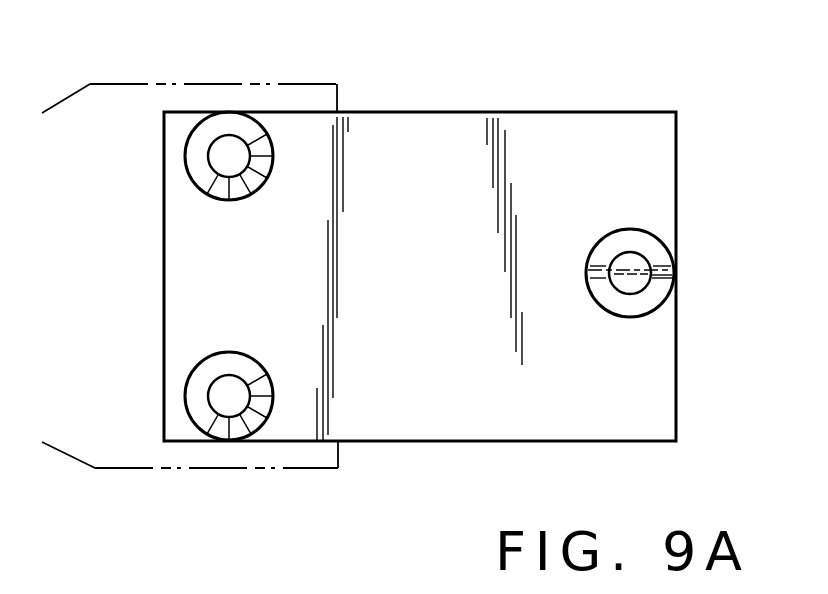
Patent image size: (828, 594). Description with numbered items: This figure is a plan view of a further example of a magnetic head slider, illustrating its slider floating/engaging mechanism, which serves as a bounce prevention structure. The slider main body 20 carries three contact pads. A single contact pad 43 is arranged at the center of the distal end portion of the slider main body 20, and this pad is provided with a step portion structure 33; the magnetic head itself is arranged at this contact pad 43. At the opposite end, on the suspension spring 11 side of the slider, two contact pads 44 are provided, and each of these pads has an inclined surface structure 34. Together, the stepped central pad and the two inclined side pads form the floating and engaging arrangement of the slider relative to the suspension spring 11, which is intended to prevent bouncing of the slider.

The suspension spring 11 is at (107, 472).
The slider main body 20 is at (566, 128).
The step portion structure 33 is at (650, 298).
The inclined surface structure 34 is at (195, 157).
The contact pad 43 is at (650, 230).
The contact pad 44 is at (193, 128).